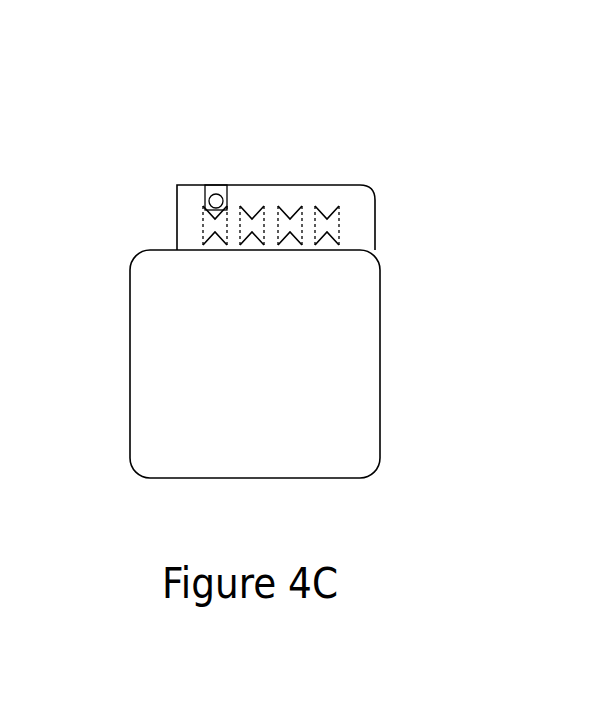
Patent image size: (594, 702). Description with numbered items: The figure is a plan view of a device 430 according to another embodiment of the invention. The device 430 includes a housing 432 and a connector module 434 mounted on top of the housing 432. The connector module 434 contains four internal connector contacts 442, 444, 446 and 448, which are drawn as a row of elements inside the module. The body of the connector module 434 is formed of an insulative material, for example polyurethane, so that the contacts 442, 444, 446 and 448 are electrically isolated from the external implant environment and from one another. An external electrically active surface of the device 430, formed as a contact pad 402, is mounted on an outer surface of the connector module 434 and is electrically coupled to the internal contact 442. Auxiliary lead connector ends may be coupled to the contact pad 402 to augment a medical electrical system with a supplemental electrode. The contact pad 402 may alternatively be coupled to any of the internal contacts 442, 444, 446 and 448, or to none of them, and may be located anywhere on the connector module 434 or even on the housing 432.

The device 430 is at (480, 98).
The housing 432 is at (343, 431).
The connector module 434 is at (363, 215).
The contact pad 402 is at (212, 197).
The internal connector contact 442 is at (207, 231).
The internal connector contact 444 is at (262, 213).
The internal connector contact 446 is at (300, 213).
The internal connector contact 448 is at (337, 212).